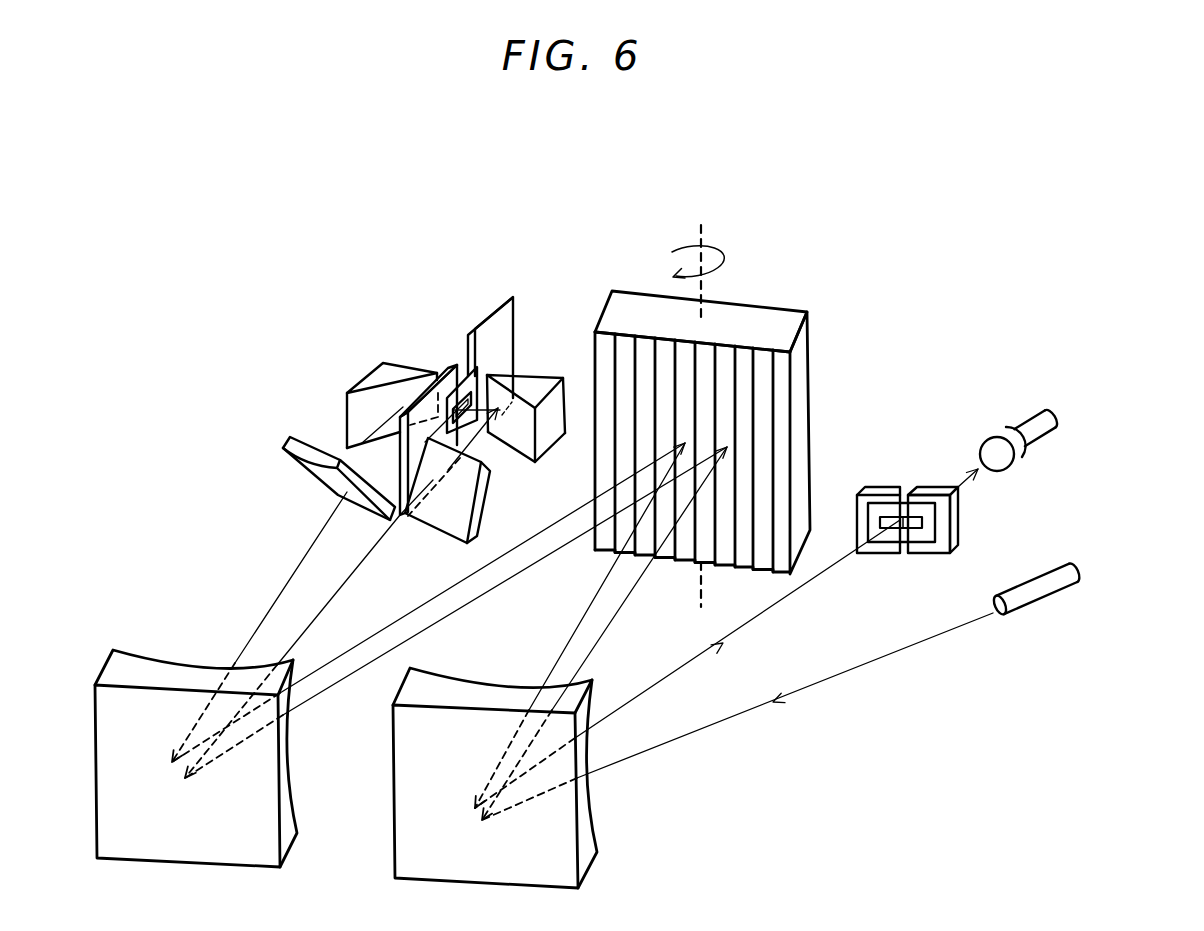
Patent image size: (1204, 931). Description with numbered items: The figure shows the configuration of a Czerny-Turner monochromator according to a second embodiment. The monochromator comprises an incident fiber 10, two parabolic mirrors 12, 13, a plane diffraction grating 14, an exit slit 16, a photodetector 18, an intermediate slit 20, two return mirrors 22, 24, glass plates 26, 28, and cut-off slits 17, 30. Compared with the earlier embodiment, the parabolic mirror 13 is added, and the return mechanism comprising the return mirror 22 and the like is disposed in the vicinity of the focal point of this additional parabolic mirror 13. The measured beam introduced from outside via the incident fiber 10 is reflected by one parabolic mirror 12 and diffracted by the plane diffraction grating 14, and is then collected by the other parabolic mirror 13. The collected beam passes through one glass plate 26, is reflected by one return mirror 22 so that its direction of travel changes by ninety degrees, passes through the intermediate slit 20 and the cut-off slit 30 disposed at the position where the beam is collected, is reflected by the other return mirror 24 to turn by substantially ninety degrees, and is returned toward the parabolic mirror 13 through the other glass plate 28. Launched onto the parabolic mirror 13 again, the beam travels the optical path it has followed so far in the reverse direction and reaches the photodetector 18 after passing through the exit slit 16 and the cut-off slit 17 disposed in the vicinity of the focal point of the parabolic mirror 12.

The incident fiber 10 is at (1033, 590).
The parabolic mirror 12 is at (593, 848).
The parabolic mirror 13 is at (142, 680).
The plane diffraction grating 14 is at (752, 318).
The exit slit 16 is at (962, 515).
The cut-off slit 17 is at (920, 535).
The photodetector 18 is at (1050, 423).
The intermediate slit 20 is at (497, 310).
The return mirror 22 is at (552, 382).
The return mirror 24 is at (377, 375).
The glass plate 26 is at (473, 517).
The glass plate 28 is at (288, 437).
The cut-off slit 30 is at (462, 385).